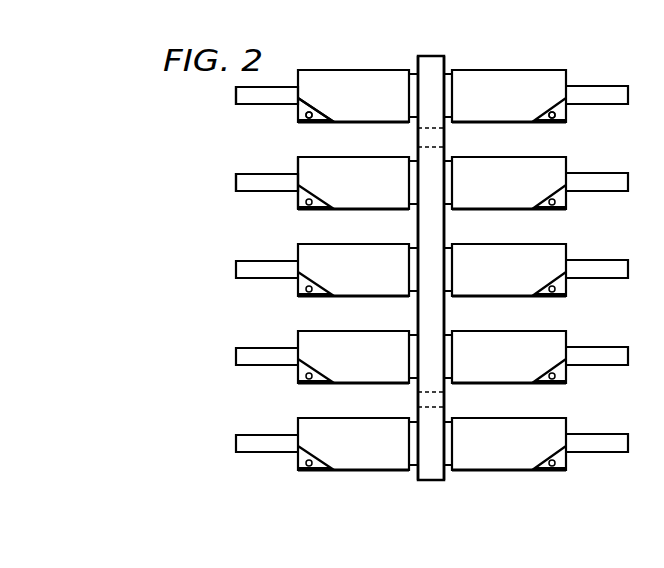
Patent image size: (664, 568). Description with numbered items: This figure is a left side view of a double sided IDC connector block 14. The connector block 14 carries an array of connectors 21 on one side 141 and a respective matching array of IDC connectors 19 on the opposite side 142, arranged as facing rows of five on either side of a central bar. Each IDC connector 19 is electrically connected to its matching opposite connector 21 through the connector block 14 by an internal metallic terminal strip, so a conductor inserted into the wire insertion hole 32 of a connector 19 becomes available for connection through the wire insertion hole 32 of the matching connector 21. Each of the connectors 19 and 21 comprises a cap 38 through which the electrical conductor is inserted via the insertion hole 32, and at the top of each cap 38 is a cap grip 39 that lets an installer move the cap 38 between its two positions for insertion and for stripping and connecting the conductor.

The IDC connector block 14 is at (431, 482).
The one side of the connector block 141 is at (444, 222).
The opposite side of the connector block 142 is at (418, 226).
The IDC connector 19 is at (350, 368).
The connector 21 is at (513, 372).
The wire insertion hole 32 is at (305, 118).
The cap 38 is at (297, 112).
The cap grip 39 is at (238, 97).